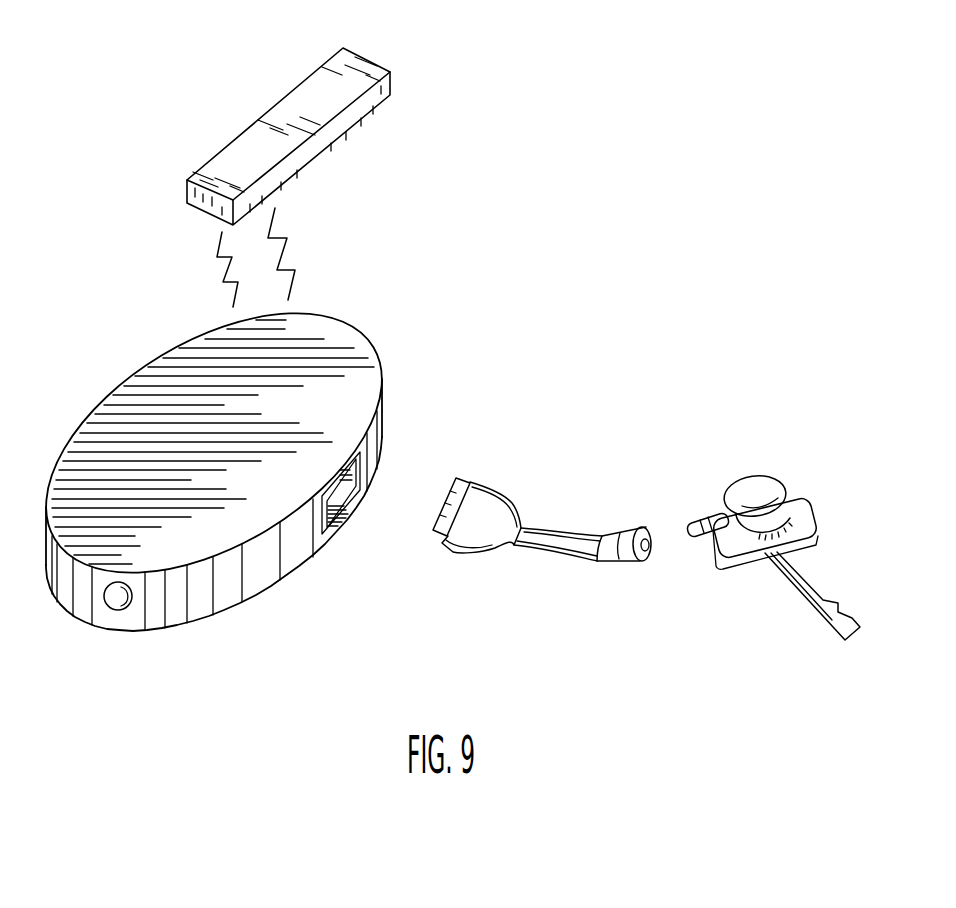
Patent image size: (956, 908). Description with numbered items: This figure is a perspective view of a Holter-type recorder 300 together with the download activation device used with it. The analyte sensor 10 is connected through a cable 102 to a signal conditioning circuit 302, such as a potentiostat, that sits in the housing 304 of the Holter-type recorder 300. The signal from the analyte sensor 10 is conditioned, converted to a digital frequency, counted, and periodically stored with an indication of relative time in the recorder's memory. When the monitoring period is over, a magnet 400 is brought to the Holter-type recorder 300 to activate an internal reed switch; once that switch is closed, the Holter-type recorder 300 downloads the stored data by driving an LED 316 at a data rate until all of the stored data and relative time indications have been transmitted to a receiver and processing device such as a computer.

The magnet 400 is at (303, 107).
The Holter-type recorder 300 is at (219, 456).
The housing 304 is at (77, 455).
The signal conditioning circuit 302 is at (355, 507).
The LED 316 is at (112, 603).
The cable 102 is at (545, 530).
The analyte sensor 10 is at (786, 464).